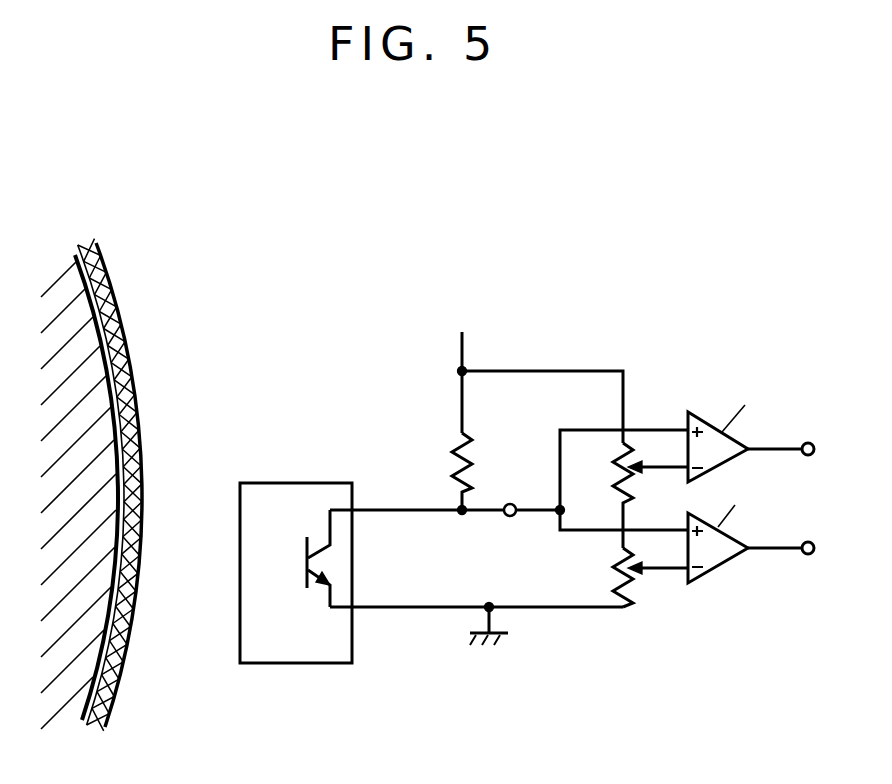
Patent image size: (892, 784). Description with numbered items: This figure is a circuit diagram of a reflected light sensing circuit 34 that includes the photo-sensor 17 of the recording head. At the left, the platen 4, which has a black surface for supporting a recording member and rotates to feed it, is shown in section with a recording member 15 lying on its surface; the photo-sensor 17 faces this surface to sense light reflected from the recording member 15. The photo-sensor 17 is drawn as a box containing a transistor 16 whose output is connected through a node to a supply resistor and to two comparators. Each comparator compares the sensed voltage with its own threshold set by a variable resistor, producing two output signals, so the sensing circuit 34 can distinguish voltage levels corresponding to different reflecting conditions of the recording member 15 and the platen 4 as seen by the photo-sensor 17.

The platen 4 is at (87, 338).
The recording member 15 is at (112, 287).
The transistor 16 is at (318, 580).
The photo-sensor 17 is at (342, 483).
The detection circuit 34 is at (380, 480).